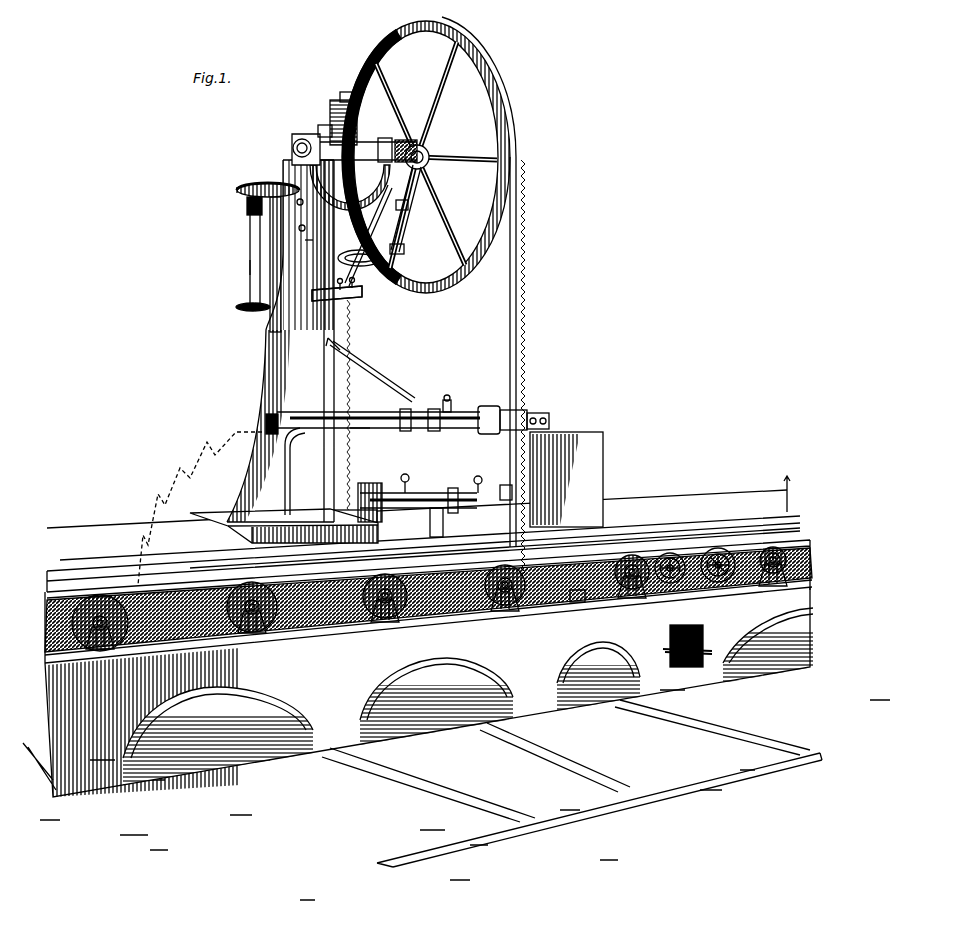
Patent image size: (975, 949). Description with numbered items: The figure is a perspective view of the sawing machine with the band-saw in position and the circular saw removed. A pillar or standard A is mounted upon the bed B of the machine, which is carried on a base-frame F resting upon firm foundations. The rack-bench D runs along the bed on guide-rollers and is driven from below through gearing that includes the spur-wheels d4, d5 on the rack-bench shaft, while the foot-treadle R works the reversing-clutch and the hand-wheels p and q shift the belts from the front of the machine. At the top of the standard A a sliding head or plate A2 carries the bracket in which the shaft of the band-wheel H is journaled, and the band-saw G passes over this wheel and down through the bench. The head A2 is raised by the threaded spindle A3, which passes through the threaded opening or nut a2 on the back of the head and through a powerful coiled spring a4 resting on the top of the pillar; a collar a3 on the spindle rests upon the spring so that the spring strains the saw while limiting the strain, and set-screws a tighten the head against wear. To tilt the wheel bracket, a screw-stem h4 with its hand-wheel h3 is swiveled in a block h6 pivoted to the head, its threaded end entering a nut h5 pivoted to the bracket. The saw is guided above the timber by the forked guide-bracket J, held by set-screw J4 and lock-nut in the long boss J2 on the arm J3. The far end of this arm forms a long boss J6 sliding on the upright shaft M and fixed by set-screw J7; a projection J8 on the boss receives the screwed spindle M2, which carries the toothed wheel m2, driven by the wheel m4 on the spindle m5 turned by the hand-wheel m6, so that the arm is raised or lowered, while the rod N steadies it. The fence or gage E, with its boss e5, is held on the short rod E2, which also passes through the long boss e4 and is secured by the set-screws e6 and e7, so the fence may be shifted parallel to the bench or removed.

The bed B is at (423, 534).
The set-screws a is at (186, 566).
The rack-bench D is at (140, 585).
The threaded opening or nut a2 is at (574, 603).
The hand-wheel p is at (716, 583).
The hand-wheel q is at (664, 584).
The foot-treadle R is at (664, 650).
The base-frame F is at (419, 692).
The band-wheel H is at (426, 157).
The band-saw G is at (524, 292).
The pillar or standard A is at (300, 392).
The upright shaft M is at (266, 360).
The screwed spindle M2 is at (268, 330).
The toothed wheel m2 is at (268, 182).
The toothed wheel m4 is at (237, 191).
The spindle m5 is at (250, 268).
The hand-wheel m6 is at (236, 307).
The coiled spring a4 is at (330, 112).
The collar or head a3 is at (340, 95).
The sliding head or plate A2 is at (313, 215).
The threaded vertical spindle or screw A3 is at (312, 293).
The hand-wheel h3 is at (383, 260).
The screw-stem or spindle h4 is at (398, 230).
The nut h5 is at (408, 206).
The block or bracket h6 is at (404, 248).
The forked guide-bracket J is at (490, 407).
The set-screw J7 is at (266, 416).
The projection J8 is at (236, 432).
The long boss J6 is at (283, 450).
The set-screw J4 is at (452, 393).
The long boss J2 is at (436, 431).
The arm or bracket J3 is at (362, 430).
The rod N is at (383, 378).
The fence or gage E is at (566, 479).
The boss e5 is at (422, 493).
The short shaft or rod E2 is at (375, 483).
The spur-wheel d5 is at (412, 470).
The set-screw e7 is at (452, 487).
The long boss e4 is at (478, 476).
The set-screw e6 is at (512, 490).
The spur-wheel d4 is at (428, 525).